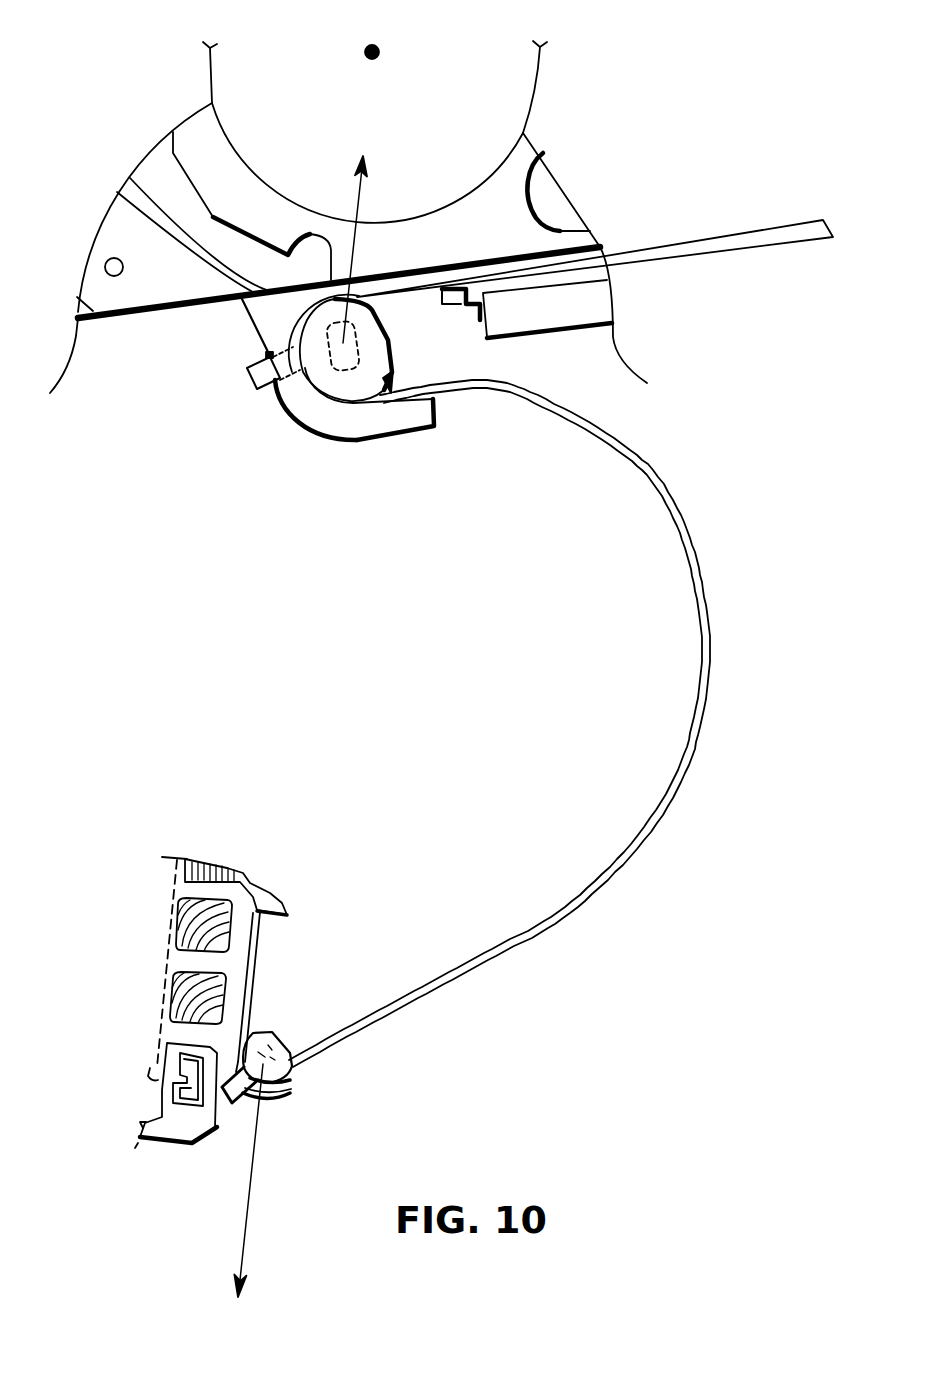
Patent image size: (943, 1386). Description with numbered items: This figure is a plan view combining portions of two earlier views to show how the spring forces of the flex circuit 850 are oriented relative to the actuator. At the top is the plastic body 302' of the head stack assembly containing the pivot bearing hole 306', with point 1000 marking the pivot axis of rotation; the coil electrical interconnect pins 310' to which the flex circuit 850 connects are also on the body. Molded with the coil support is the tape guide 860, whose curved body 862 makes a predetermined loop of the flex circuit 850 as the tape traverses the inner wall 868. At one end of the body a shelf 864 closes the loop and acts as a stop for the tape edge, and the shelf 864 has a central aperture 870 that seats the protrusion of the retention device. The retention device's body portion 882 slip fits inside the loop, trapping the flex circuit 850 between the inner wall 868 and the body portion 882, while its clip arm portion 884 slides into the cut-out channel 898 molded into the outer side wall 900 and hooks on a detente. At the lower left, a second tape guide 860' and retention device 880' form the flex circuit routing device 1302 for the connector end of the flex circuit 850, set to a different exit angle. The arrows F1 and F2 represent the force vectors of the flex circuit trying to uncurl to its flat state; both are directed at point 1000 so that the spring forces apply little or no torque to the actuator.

The pivot axis of rotation point 1000 is at (369, 58).
The pivot bearing hole 306' is at (348, 217).
The coil electrical interconnect pins 310' is at (80, 247).
The plastic body 302' is at (595, 229).
The flex circuit 850 is at (128, 220).
The outer side wall 900 is at (243, 325).
The clip arm portion 884 is at (245, 373).
The cut-out channel 898 is at (273, 387).
The curved body 862 is at (320, 423).
The inner wall 868 is at (350, 400).
The tape guide 860 is at (416, 445).
The body portion 882 is at (392, 348).
The central aperture 870 is at (348, 325).
The shelf 864 is at (396, 391).
The retention device 880' is at (268, 1048).
The tape guide 860' is at (309, 1092).
The flex circuit routing device 1302 is at (282, 1096).
The force vector F1 is at (374, 249).
The force vector F2 is at (242, 1198).